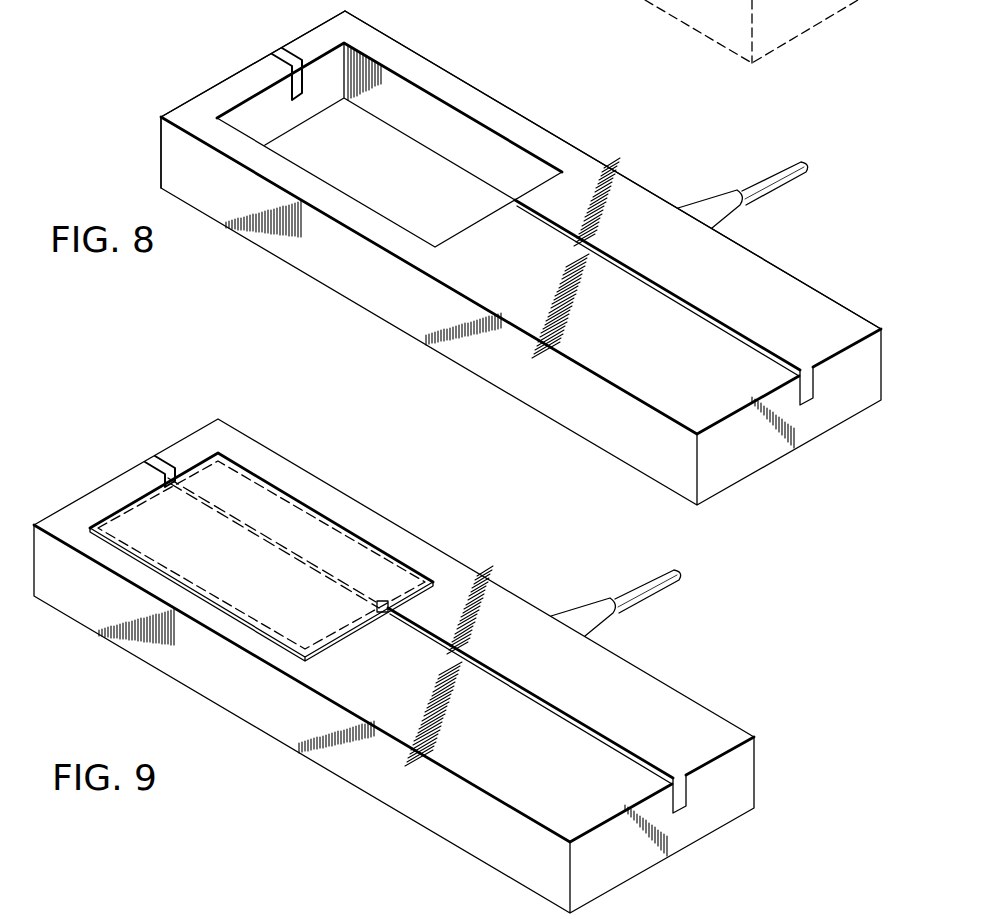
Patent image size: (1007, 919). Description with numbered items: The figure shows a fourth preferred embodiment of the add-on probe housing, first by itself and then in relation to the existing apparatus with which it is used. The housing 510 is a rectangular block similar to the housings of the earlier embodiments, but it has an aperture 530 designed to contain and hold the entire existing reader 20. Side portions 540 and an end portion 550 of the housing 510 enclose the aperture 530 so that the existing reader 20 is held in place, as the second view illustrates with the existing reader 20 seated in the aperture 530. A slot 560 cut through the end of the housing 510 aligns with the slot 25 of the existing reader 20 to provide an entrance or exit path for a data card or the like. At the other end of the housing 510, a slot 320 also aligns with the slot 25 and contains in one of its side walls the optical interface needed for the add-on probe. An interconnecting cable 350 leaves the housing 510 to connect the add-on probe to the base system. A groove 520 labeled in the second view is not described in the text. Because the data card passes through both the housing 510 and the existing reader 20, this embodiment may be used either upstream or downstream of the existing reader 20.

In FIG. 8, the housing 510 is at (643, 193).
In FIG. 9, the housing 510 is at (513, 600).
In FIG. 9, the groove 520 is at (555, 708).
In FIG. 8, the slot 320 is at (683, 298).
In FIG. 8, the interconnecting cable 350 is at (725, 220).
In FIG. 8, the aperture 530 is at (447, 178).
In FIG. 8, the side portions 540 is at (415, 65).
In FIG. 8, the end portion 550 is at (227, 92).
In FIG. 8, the slot 560 is at (292, 66).
In FIG. 9, the slot 560 is at (165, 484).
In FIG. 9, the existing reader 20 is at (305, 456).
In FIG. 9, the slot 25 is at (312, 558).